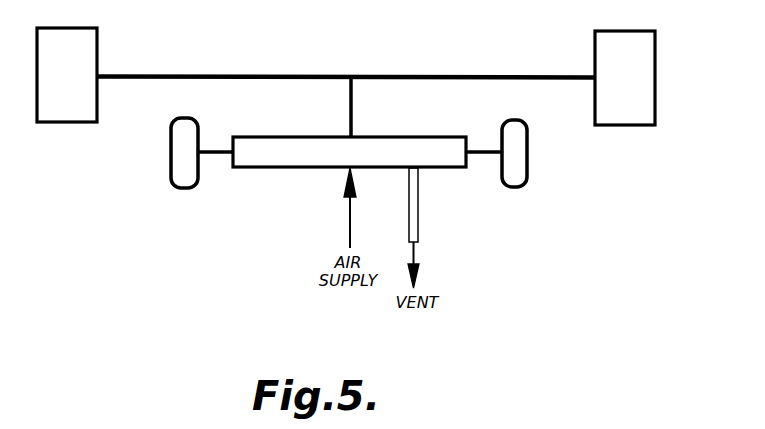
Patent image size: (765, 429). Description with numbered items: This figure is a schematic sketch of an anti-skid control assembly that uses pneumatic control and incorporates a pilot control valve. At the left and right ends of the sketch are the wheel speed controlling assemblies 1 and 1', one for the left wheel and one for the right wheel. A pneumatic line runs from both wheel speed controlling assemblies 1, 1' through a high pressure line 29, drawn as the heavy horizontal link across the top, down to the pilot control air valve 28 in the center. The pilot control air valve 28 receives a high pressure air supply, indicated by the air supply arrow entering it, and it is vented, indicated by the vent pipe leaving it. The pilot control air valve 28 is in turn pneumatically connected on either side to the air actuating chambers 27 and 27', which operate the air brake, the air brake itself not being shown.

The wheel speed controlling assembly 1 is at (85, 74).
The wheel speed controlling assembly 1' is at (647, 76).
The air actuating chamber 27 is at (178, 153).
The air actuating chamber 27' is at (519, 153).
The pilot control air valve 28 is at (383, 137).
The high pressure line 29 is at (333, 76).